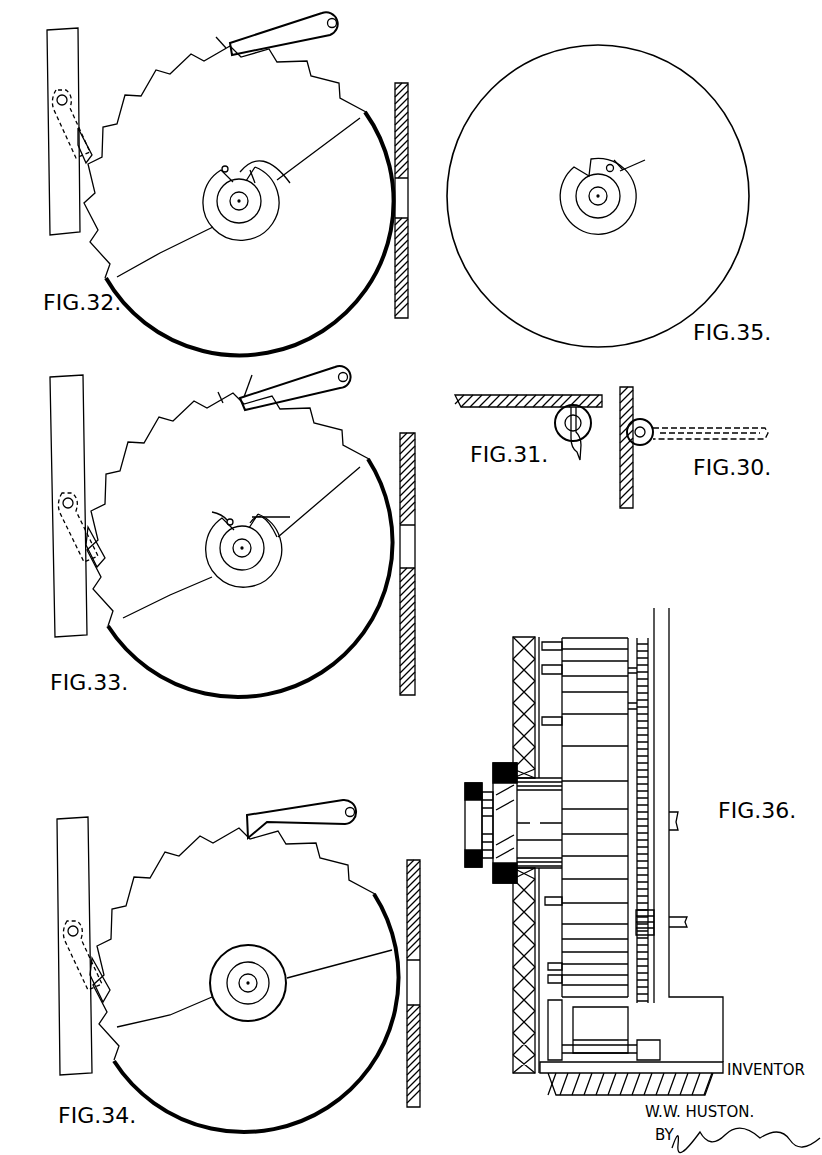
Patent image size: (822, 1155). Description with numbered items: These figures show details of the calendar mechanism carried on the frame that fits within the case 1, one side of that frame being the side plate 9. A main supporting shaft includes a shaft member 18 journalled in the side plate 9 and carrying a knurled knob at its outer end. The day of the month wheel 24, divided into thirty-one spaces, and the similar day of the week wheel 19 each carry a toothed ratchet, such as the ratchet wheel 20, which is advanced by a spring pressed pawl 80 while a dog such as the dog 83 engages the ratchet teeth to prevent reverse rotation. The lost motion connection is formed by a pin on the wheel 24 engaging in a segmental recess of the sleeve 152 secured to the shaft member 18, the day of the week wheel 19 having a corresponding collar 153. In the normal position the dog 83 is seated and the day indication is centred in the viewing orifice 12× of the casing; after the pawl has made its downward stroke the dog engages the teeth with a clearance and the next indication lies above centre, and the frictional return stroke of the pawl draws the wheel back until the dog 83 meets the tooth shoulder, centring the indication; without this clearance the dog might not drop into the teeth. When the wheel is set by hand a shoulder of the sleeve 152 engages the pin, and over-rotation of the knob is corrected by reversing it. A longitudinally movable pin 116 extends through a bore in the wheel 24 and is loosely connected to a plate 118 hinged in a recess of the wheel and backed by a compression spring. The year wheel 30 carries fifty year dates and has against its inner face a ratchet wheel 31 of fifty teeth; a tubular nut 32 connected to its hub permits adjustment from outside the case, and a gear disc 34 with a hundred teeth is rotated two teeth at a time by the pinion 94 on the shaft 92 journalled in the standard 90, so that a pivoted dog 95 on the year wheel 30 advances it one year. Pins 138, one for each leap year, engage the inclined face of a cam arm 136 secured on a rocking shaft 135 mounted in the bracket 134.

In FIG. 36, the case 1 is at (527, 707).
In FIG. 36, the side plate 9 is at (662, 703).
In FIG. 32, the viewing orifice 12 is at (409, 192).
In FIG. 33, the viewing orifice 12 is at (416, 545).
In FIG. 34, the viewing orifice 12 is at (422, 960).
In FIG. 36, the shaft member 18 is at (677, 813).
In FIG. 32, the date disk hub 19 is at (258, 284).
In FIG. 33, the date disk hub 19 is at (260, 579).
In FIG. 34, the date disk hub 19 is at (248, 999).
In FIG. 35, the date disk hub 19 is at (598, 196).
In FIG. 32, the ratchet wheel 20 is at (232, 108).
In FIG. 33, the ratchet wheel 20 is at (244, 460).
In FIG. 34, the ratchet wheel 20 is at (246, 980).
In FIG. 32, the day of the month wheel 24 is at (227, 166).
In FIG. 33, the day of the month wheel 24 is at (216, 513).
In FIG. 35, the day of the month wheel 24 is at (633, 160).
In FIG. 36, the year wheel 30 is at (567, 935).
In FIG. 36, the ratchet wheel 31 is at (633, 708).
In FIG. 36, the tubular nut 32 is at (495, 866).
In FIG. 36, the gear disc 34 is at (640, 640).
In FIG. 32, the spring pressed pawl 80 is at (85, 133).
In FIG. 33, the spring pressed pawl 80 is at (100, 556).
In FIG. 34, the spring pressed pawl 80 is at (100, 985).
In FIG. 32, the dog 83 is at (302, 33).
In FIG. 33, the dog 83 is at (300, 385).
In FIG. 34, the dog 83 is at (293, 812).
In FIG. 36, the standard 90 is at (627, 1027).
In FIG. 36, the shaft 92 is at (688, 921).
In FIG. 36, the pinion 94 is at (653, 915).
In FIG. 36, the pivoted dog 95 is at (633, 675).
In FIG. 31, the longitudinally movable pin 116 is at (572, 452).
In FIG. 30, the longitudinally movable pin 116 is at (733, 430).
In FIG. 31, the plate 118 is at (488, 395).
In FIG. 30, the plate 118 is at (635, 396).
In FIG. 36, the bracket 134 is at (567, 1043).
In FIG. 36, the rocking shaft 135 is at (647, 1042).
In FIG. 36, the cam arm 136 is at (550, 1012).
In FIG. 36, the pins 138 is at (553, 640).
In FIG. 32, the sleeve 152 is at (266, 230).
In FIG. 33, the sleeve 152 is at (270, 575).
In FIG. 35, the sleeve 152 is at (630, 221).
In FIG. 32, the collar 153 is at (290, 183).
In FIG. 33, the collar 153 is at (322, 527).
In FIG. 35, the collar 153 is at (588, 167).